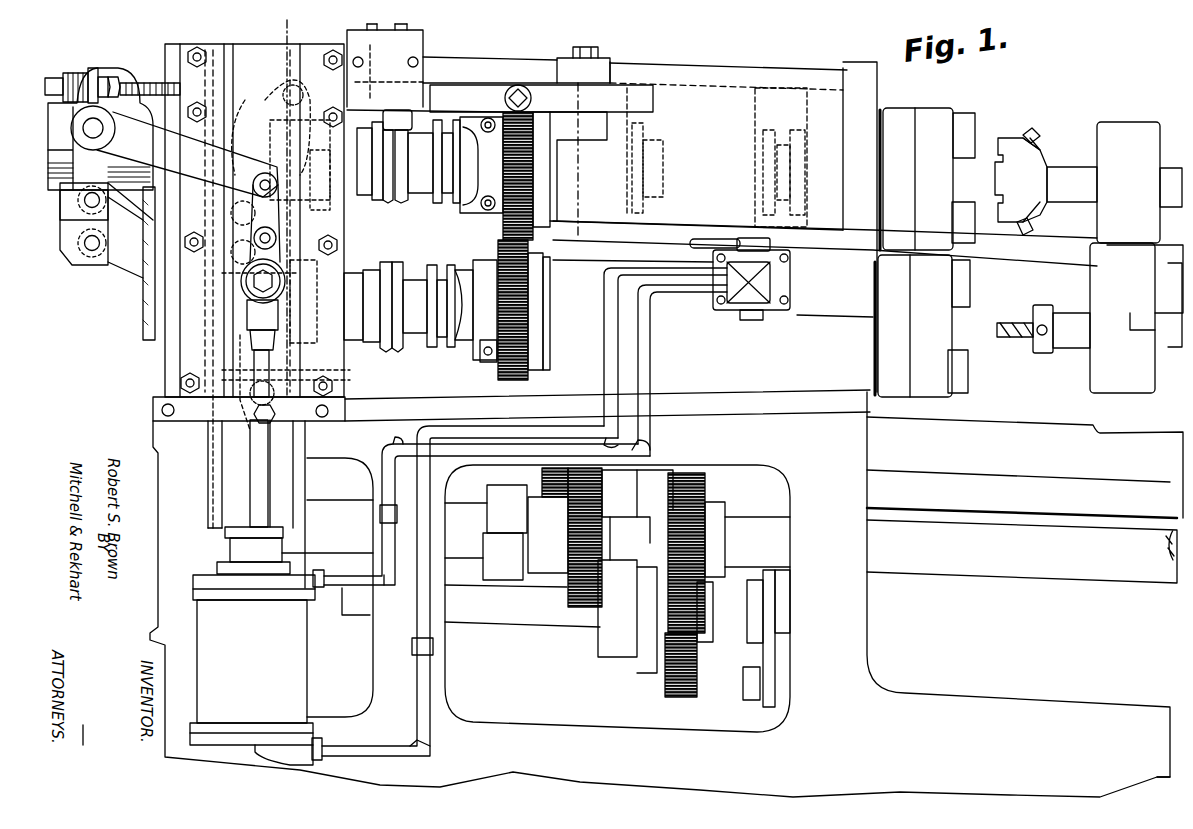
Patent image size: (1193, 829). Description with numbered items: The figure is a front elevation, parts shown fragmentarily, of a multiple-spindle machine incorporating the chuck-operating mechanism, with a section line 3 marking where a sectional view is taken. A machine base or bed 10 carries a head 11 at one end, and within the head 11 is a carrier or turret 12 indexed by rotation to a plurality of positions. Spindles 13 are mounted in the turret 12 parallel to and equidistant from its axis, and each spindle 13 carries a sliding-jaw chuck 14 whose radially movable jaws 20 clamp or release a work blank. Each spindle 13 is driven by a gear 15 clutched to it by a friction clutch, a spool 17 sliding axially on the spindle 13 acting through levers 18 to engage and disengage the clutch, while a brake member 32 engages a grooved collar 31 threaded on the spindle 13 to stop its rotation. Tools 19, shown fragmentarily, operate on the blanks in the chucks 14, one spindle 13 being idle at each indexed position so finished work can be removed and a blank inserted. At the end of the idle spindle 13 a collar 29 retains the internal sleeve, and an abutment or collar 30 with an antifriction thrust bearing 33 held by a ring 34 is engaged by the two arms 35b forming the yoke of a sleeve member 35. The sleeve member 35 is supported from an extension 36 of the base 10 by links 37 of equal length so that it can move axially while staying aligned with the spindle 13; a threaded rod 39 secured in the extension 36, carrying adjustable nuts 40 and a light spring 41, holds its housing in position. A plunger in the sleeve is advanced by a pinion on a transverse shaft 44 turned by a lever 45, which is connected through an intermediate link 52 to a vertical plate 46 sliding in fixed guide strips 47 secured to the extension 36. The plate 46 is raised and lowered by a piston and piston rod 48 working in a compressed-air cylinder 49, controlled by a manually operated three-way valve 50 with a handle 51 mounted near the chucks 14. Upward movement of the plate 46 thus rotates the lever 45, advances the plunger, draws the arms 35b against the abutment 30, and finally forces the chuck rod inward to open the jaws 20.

The section line 3- 3 is at (305, 22).
The machine base or bed 10 is at (855, 612).
The head 11 is at (680, 72).
The carrier or turret 12 is at (740, 95).
The spindle 13 is at (650, 200).
The chuck 14 is at (922, 115).
The gear 15 is at (533, 177).
The spool 17 is at (438, 203).
The levers 18 is at (468, 225).
The tools 19 is at (1028, 170).
The jaws 20 is at (972, 130).
The collar 29 is at (290, 305).
The abutment or collar 30 is at (284, 355).
The grooved collar 31 is at (398, 210).
The brake member 32 is at (405, 115).
The antifriction thrust bearing 33 is at (300, 268).
The ring 34 is at (345, 343).
The sleeve member 35 is at (250, 110).
The arms 35b is at (285, 195).
The extension 36 is at (148, 312).
The links 37 is at (62, 255).
The threaded rod 39 is at (147, 82).
The nuts 40 is at (103, 70).
The spring 41 is at (70, 73).
The transverse shaft 44 is at (98, 135).
The lever 45 is at (185, 138).
The vertical plate 46 is at (235, 352).
The guide strips 47 is at (220, 50).
The piston and piston rod 48 is at (262, 484).
The cylinder 49 is at (257, 667).
The valve 50 is at (745, 300).
The handle 51 is at (700, 239).
The intermediate link 52 is at (278, 215).